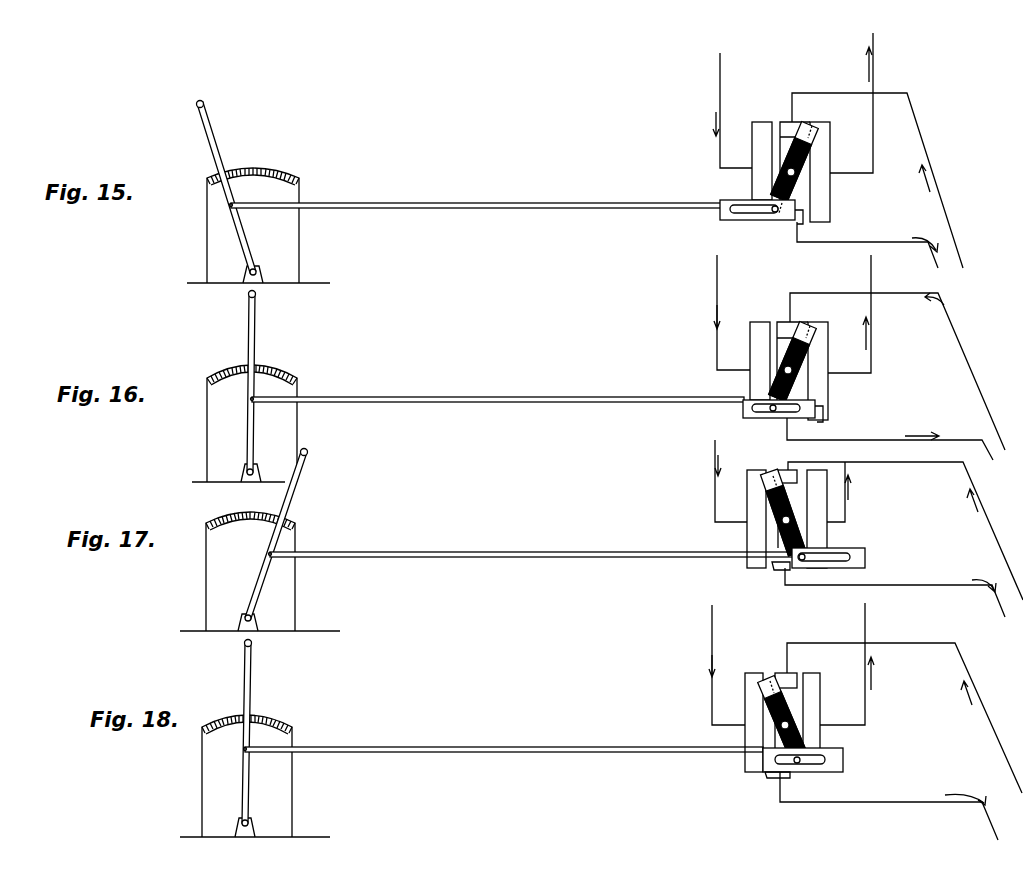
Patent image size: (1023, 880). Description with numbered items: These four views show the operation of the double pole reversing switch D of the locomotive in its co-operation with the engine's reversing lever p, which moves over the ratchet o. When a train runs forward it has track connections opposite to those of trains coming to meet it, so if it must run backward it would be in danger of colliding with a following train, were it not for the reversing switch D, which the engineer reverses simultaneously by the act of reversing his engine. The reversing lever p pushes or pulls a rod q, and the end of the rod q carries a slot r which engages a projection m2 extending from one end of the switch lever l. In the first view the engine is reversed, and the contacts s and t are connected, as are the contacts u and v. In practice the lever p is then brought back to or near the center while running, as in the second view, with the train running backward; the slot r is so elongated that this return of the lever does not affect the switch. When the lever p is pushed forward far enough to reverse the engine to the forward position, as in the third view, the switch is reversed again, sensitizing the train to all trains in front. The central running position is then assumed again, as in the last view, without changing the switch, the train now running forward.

In FIG. 15, the reversing lever p is at (218, 162).
In FIG. 16, the reversing lever p is at (258, 328).
In FIG. 17, the reversing lever p is at (292, 498).
In FIG. 18, the reversing lever p is at (250, 673).
In FIG. 15, the ratchet o is at (270, 172).
In FIG. 16, the ratchet o is at (292, 372).
In FIG. 17, the ratchet o is at (222, 512).
In FIG. 18, the ratchet o is at (268, 720).
In FIG. 15, the rod q is at (476, 194).
In FIG. 16, the rod q is at (498, 390).
In FIG. 17, the rod q is at (531, 544).
In FIG. 18, the rod q is at (504, 745).
In FIG. 15, the contact s is at (752, 158).
In FIG. 16, the contact s is at (750, 342).
In FIG. 17, the contact s is at (747, 501).
In FIG. 18, the contact s is at (745, 688).
In FIG. 15, the contact u is at (793, 122).
In FIG. 16, the contact u is at (788, 322).
In FIG. 17, the contact u is at (790, 470).
In FIG. 18, the contact u is at (792, 673).
In FIG. 15, the contact v is at (825, 186).
In FIG. 16, the contact v is at (823, 380).
In FIG. 17, the contact v is at (827, 500).
In FIG. 18, the contact v is at (820, 693).
In FIG. 15, the switch lever l is at (815, 160).
In FIG. 16, the switch lever l is at (810, 362).
In FIG. 17, the switch lever l is at (783, 512).
In FIG. 18, the switch lever l is at (782, 716).
In FIG. 15, the slot r is at (748, 202).
In FIG. 16, the slot r is at (750, 402).
In FIG. 17, the slot r is at (865, 556).
In FIG. 18, the slot r is at (820, 764).
In FIG. 15, the projection m2 is at (778, 214).
In FIG. 16, the projection m2 is at (771, 412).
In FIG. 17, the projection m2 is at (790, 568).
In FIG. 18, the projection m2 is at (800, 764).
In FIG. 15, the contact t is at (805, 222).
In FIG. 16, the contact t is at (823, 420).
In FIG. 17, the contact t is at (772, 568).
In FIG. 18, the contact t is at (768, 778).
In FIG. 15, the reversing switch D is at (862, 192).
In FIG. 16, the reversing switch D is at (855, 393).
In FIG. 17, the reversing switch D is at (862, 521).
In FIG. 18, the reversing switch D is at (845, 750).